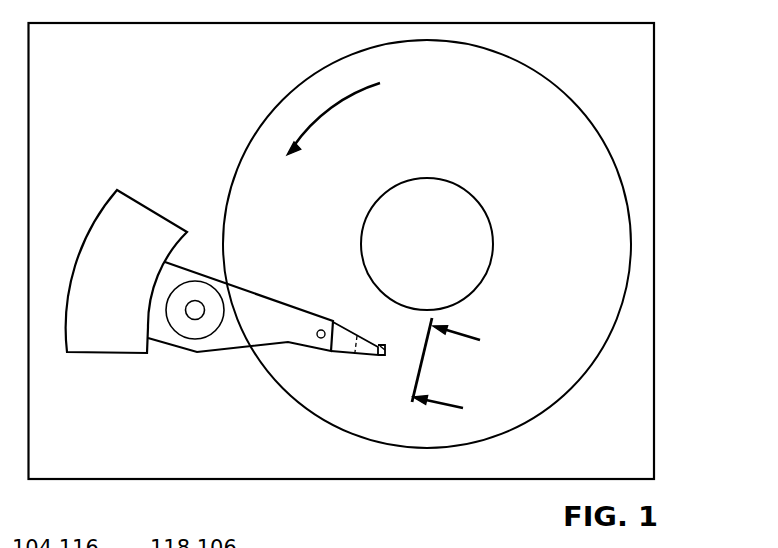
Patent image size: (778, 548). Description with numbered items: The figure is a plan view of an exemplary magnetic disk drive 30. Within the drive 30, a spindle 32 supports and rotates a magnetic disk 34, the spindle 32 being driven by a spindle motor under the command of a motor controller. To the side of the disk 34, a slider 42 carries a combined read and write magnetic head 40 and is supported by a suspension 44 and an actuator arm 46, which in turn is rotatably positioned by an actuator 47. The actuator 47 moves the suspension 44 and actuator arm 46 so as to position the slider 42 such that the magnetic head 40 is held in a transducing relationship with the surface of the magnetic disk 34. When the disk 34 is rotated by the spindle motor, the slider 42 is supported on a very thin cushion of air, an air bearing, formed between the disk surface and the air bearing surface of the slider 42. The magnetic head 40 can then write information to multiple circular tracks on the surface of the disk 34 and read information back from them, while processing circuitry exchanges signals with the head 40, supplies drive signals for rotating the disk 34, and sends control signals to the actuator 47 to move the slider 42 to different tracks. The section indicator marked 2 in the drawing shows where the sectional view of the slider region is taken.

The magnetic disk drive 30 is at (669, 64).
The spindle 32 is at (467, 185).
The magnetic disk 34 is at (576, 266).
The magnetic head 40 is at (390, 355).
The slider 42 is at (383, 345).
The suspension 44 is at (343, 350).
The actuator arm 46 is at (284, 311).
The actuator 47 is at (158, 218).
The section line 2- 2 is at (457, 373).